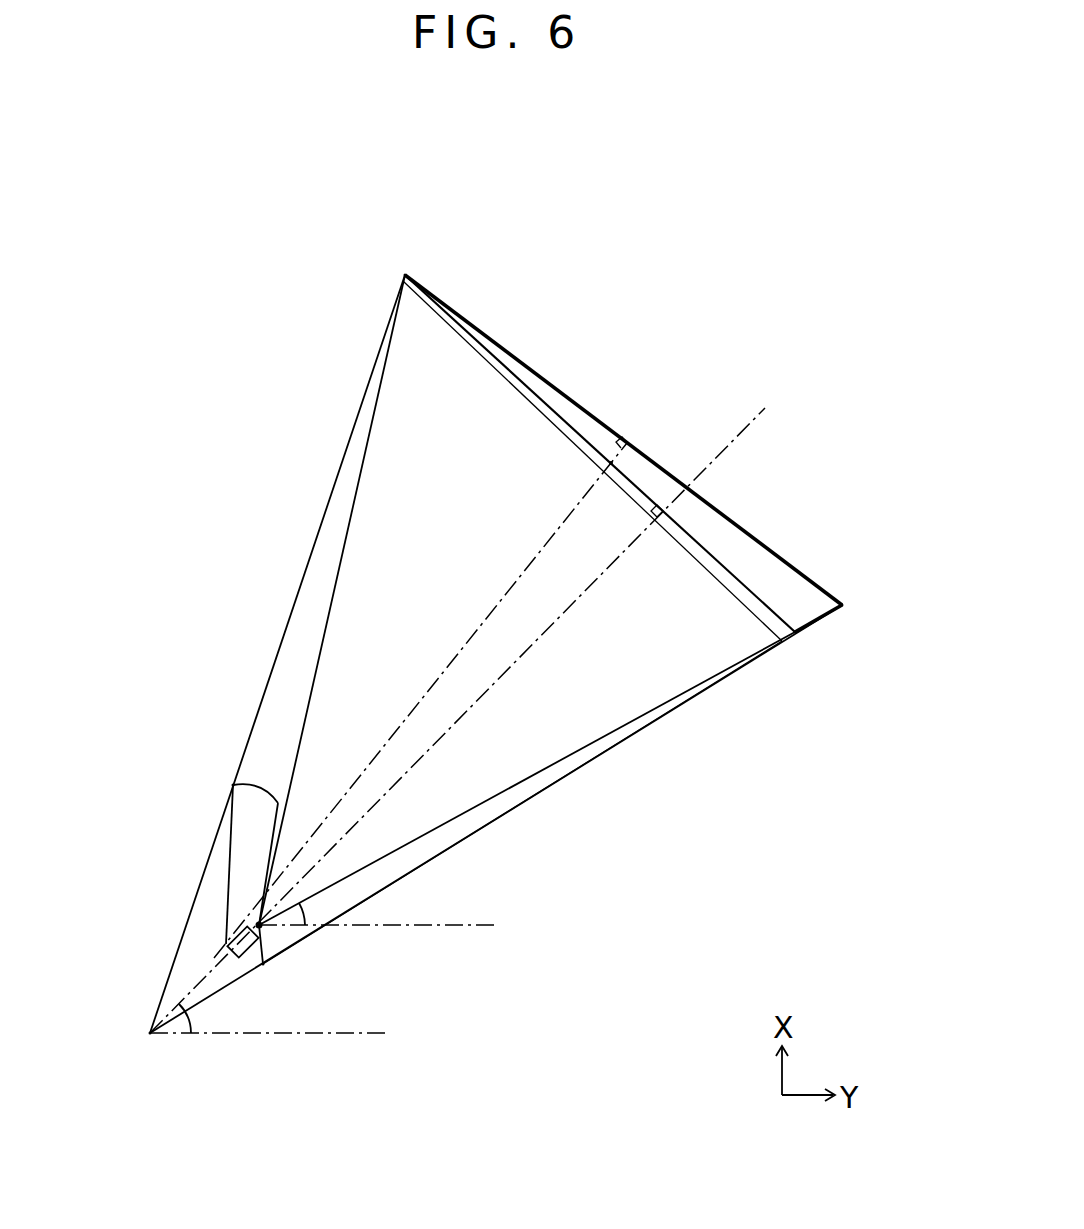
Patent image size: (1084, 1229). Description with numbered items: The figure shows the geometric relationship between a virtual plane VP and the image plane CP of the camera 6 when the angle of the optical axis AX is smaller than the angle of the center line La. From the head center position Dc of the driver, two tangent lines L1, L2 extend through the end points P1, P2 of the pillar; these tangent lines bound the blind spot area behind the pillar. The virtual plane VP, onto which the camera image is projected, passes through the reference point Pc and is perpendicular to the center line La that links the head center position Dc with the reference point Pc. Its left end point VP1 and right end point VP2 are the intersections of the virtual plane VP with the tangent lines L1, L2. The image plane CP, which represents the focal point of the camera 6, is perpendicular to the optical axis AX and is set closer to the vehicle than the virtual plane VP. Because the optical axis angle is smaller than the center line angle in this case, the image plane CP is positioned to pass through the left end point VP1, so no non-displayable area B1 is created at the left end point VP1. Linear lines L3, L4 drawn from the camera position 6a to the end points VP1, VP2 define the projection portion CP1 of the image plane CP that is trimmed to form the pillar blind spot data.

The camera 6 is at (224, 940).
The camera position 6a is at (259, 922).
The virtual plane VP is at (470, 324).
The left end point VP1 is at (405, 273).
The right end point VP2 is at (842, 604).
The image plane CP is at (706, 549).
The projection portion CP1 is at (604, 468).
The reference point Pc is at (628, 442).
The optical axis AX is at (738, 434).
The center line La is at (486, 620).
The tangent line L1 is at (310, 570).
The tangent line L2 is at (546, 794).
The linear line L3 is at (358, 495).
The linear line L4 is at (564, 757).
The non-displayable area B1 is at (796, 634).
The end point of the pillar P1 is at (233, 784).
The end point of the pillar P2 is at (264, 965).
The head center position Dc is at (150, 1035).